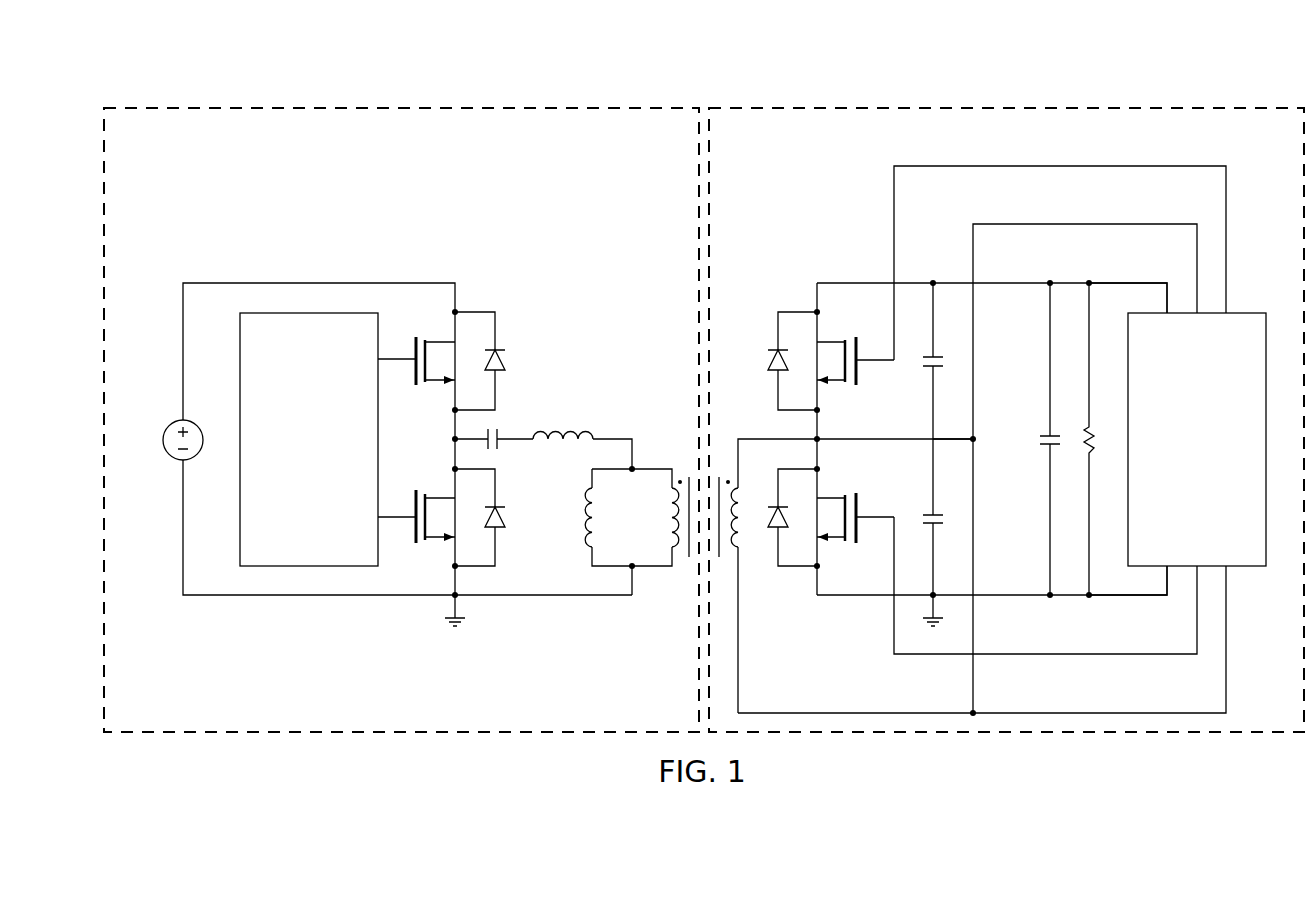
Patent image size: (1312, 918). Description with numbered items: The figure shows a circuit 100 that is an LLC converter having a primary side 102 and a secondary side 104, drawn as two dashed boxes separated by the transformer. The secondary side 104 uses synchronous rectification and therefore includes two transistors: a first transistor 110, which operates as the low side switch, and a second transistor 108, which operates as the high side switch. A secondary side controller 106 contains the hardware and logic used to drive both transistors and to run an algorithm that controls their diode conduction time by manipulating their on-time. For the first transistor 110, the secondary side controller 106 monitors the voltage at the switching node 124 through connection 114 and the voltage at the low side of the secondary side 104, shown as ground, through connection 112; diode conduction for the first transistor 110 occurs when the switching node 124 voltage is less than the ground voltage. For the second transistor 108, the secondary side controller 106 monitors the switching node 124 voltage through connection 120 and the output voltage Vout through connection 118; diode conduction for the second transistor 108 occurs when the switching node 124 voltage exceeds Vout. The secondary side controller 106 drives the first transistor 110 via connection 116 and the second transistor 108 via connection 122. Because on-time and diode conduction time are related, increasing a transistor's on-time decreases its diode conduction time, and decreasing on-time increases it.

The circuit 100 is at (462, 64).
The primary side 102 is at (341, 103).
The secondary side 104 is at (1069, 102).
The secondary side controller 106 is at (1181, 491).
The second transistor 108 is at (862, 369).
The first transistor 110 is at (862, 508).
The connection 112 is at (1128, 597).
The connection 114 is at (1226, 639).
The connection 116 is at (1085, 657).
The connection 118 is at (1128, 280).
The connection 120 is at (1085, 222).
The connection 122 is at (1226, 240).
The switching node 124 is at (978, 443).